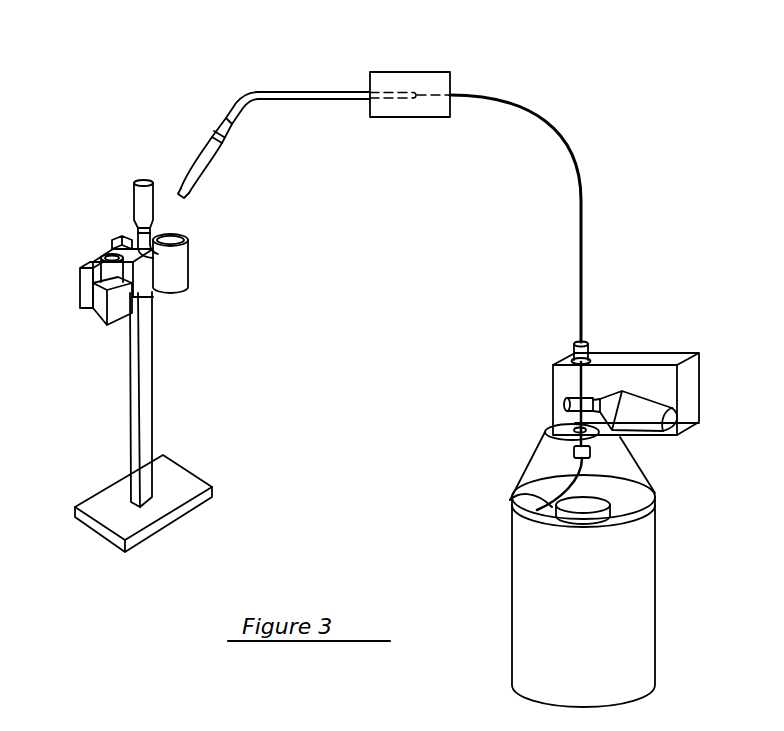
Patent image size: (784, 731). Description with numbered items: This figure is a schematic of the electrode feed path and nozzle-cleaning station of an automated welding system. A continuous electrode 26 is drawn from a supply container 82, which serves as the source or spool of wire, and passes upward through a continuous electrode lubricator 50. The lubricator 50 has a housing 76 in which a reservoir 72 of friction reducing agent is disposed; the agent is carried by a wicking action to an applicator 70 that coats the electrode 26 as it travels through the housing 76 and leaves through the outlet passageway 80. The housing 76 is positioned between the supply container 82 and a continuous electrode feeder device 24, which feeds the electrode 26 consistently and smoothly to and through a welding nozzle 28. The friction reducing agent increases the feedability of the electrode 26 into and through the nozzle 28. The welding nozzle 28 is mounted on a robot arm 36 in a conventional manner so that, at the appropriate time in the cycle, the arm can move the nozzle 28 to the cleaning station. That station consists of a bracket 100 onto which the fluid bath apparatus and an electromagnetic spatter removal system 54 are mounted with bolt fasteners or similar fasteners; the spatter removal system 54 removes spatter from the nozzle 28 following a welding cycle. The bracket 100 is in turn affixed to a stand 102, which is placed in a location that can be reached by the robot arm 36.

The continuous electrode feeder device 24 is at (409, 72).
The continuous electrode 26 is at (508, 102).
The welding nozzle 28 is at (181, 154).
The robot arm 36 is at (360, 256).
The continuous electrode lubricator 50 is at (611, 496).
The electromagnetic spatter removal system 54 is at (102, 286).
The applicator 70 is at (567, 403).
The reservoir 72 is at (645, 420).
The housing 76 is at (692, 387).
The outlet passageway 80 is at (590, 350).
The supply container 82 is at (600, 641).
The bracket 100 is at (93, 260).
The stand 102 is at (156, 410).